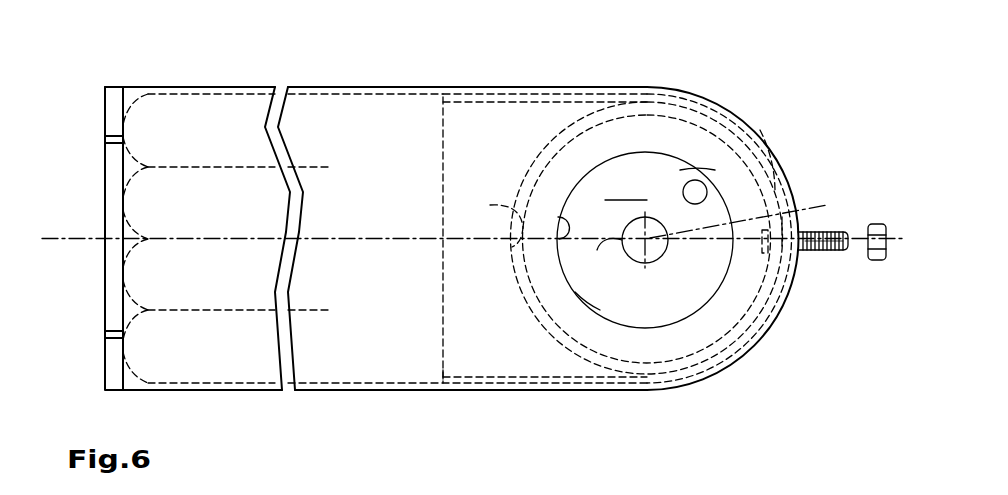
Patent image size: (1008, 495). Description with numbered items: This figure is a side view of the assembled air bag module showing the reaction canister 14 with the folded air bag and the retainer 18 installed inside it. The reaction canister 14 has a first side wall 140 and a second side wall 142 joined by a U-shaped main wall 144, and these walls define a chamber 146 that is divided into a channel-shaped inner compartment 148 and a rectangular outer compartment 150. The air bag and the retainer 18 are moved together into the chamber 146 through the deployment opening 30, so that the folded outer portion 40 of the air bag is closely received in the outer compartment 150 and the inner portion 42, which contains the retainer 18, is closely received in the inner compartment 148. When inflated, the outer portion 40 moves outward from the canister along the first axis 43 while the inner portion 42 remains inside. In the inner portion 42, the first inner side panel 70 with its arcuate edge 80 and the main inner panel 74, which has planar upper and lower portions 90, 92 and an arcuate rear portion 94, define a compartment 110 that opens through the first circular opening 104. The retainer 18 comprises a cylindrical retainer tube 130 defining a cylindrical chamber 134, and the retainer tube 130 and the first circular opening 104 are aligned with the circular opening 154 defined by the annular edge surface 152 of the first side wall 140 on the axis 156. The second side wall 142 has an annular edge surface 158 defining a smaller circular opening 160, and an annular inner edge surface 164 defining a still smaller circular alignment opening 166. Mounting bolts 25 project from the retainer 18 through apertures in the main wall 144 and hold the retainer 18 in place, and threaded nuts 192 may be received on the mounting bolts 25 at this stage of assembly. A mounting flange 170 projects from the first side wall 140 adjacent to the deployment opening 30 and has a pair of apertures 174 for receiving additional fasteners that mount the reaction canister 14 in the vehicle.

The reaction canister 14 is at (99, 70).
The retainer 18 is at (688, 388).
The mounting bolts 25 is at (823, 253).
The deployment opening 30 is at (92, 208).
The outer portion 40 is at (355, 108).
The inner portion 42 is at (528, 103).
The first axis 43 is at (337, 238).
The first inner side panel 70 is at (486, 145).
The main inner panel 74 is at (782, 150).
The arcuate edge 80 is at (515, 205).
The upper portion 90 is at (568, 97).
The lower portion 92 is at (527, 387).
The rear portion 94 is at (754, 212).
The first circular opening 104 is at (620, 397).
The compartment 110 is at (629, 188).
The retainer tube 130 is at (755, 322).
The cylindrical chamber 134 is at (728, 350).
The first side wall 140 is at (258, 352).
The second side wall 142 is at (653, 163).
The main wall 144 is at (327, 86).
The chamber 146 is at (128, 263).
The inner compartment 148 is at (443, 357).
The outer compartment 150 is at (357, 380).
The annular edge surface 152 is at (557, 240).
The circular opening 154 is at (566, 292).
The axis 156 is at (783, 208).
The annular edge surface 158 is at (594, 257).
The circular opening 160 is at (634, 275).
The annular inner edge surface 164 is at (695, 180).
The circular alignment opening 166 is at (708, 155).
The mounting flange 170 is at (110, 182).
The apertures 174 is at (90, 136).
The threaded nuts 192 is at (877, 224).